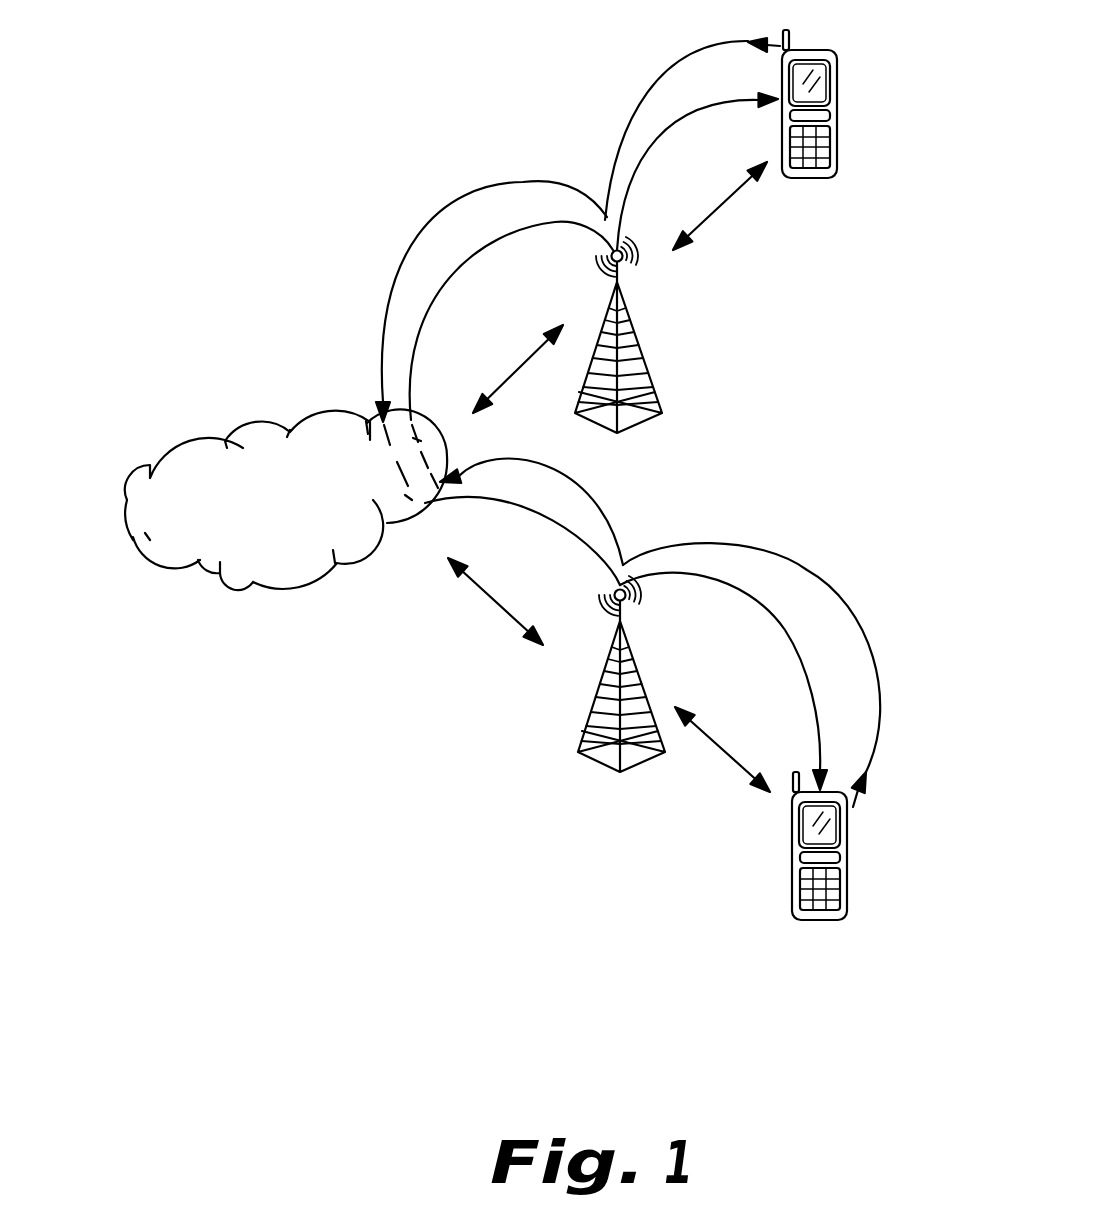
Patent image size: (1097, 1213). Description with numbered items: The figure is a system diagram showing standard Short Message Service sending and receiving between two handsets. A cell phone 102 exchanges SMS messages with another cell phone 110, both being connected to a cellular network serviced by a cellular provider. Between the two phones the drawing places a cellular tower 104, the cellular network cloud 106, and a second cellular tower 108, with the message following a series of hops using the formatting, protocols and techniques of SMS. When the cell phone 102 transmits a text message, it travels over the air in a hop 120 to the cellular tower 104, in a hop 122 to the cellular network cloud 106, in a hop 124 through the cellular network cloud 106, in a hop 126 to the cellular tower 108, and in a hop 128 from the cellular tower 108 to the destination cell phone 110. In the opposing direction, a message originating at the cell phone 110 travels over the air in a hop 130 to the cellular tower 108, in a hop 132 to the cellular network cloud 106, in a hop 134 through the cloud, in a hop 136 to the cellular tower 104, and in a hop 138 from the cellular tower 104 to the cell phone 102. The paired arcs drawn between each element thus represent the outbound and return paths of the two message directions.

The cell phone 102 is at (838, 84).
The cellular tower 104 is at (641, 354).
The cellular network cloud 106 is at (127, 497).
The cellular tower 108 is at (587, 737).
The cell phone 110 is at (793, 893).
The hop 120 is at (647, 82).
The hop 122 is at (397, 270).
The hop 124 is at (385, 458).
The hop 126 is at (563, 520).
The hop 128 is at (783, 636).
The hop 130 is at (877, 643).
The hop 132 is at (607, 510).
The hop 134 is at (443, 442).
The hop 136 is at (477, 257).
The hop 138 is at (667, 135).